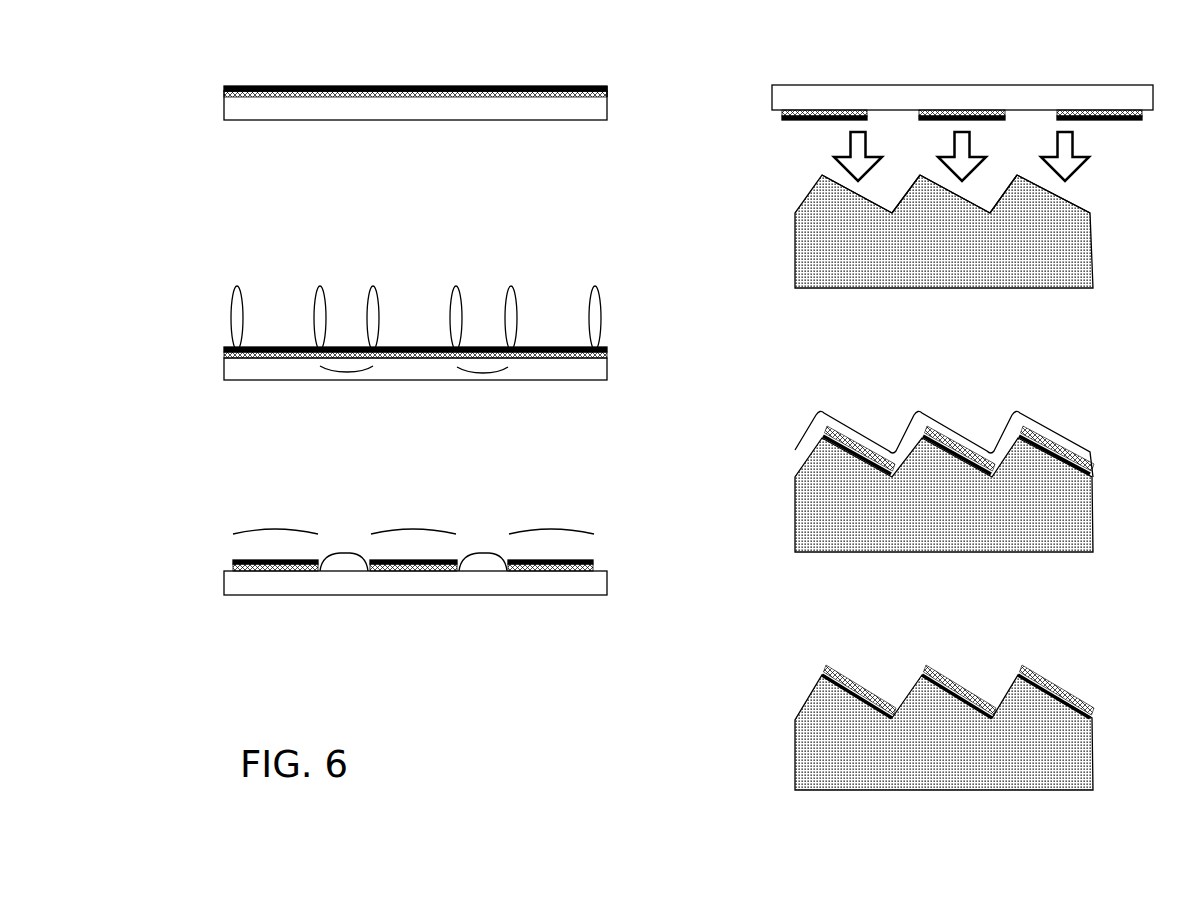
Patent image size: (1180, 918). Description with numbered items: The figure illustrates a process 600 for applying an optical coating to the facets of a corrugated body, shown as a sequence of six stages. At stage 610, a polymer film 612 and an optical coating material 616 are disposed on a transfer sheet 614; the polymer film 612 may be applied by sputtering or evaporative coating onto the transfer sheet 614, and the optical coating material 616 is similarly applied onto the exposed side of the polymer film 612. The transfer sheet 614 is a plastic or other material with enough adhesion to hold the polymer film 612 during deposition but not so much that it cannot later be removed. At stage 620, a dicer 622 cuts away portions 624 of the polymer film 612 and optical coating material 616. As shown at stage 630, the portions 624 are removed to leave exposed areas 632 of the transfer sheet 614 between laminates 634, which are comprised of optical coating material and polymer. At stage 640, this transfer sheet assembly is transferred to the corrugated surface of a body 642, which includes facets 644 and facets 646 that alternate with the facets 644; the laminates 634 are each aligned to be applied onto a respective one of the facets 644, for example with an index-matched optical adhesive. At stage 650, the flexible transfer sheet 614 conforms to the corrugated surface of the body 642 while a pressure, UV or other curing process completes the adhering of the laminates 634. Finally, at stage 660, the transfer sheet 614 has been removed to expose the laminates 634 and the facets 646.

The process 600 is at (596, 704).
The stage 610 is at (279, 156).
The polymer film 612 is at (613, 96).
The transfer sheet 614 is at (501, 124).
The optical coating material 616 is at (499, 83).
The stage 620 is at (279, 417).
The dicer 622 is at (585, 277).
The portions 624 is at (483, 374).
The stage 630 is at (279, 631).
The exposed areas 632 is at (362, 551).
The laminates 634 is at (293, 522).
The stage 640 is at (1148, 290).
The body 642 is at (1081, 285).
The facets 644 is at (863, 206).
The facets 646 is at (907, 207).
The stage 650 is at (1145, 551).
The stage 660 is at (1148, 790).